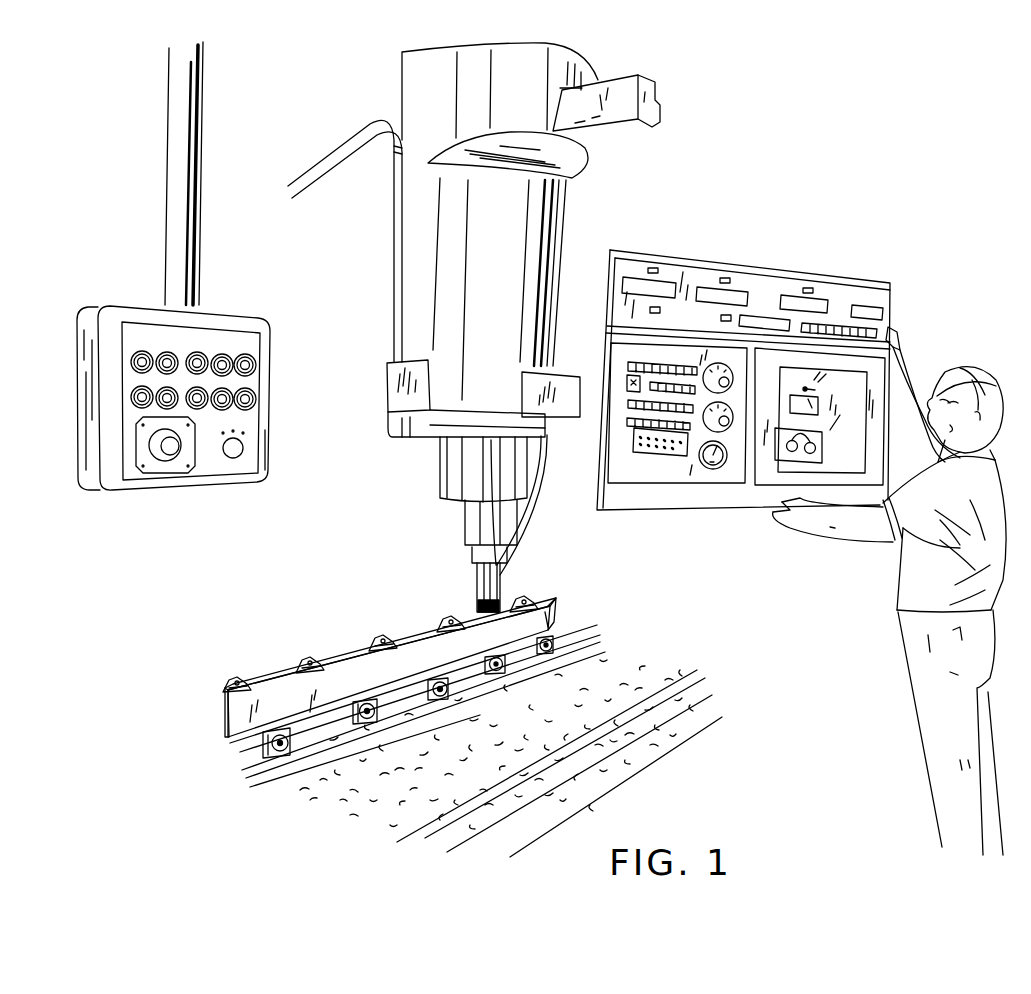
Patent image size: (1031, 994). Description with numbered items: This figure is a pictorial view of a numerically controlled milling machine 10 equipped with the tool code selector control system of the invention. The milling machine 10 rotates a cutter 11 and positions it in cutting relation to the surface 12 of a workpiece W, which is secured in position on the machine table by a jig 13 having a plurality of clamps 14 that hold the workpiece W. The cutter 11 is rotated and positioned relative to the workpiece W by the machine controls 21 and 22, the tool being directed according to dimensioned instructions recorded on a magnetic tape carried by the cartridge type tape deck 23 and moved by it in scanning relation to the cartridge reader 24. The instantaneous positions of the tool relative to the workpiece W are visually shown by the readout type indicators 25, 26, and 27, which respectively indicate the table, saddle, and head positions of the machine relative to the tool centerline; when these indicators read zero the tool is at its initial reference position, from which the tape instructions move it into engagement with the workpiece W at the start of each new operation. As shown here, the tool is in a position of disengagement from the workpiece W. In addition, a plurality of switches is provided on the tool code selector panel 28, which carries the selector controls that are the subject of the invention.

The numerically controlled milling machine 10 is at (599, 187).
The cutter 11 is at (478, 595).
The surface 12 is at (282, 695).
The jig 13 is at (252, 786).
The clamps 14 is at (370, 642).
The machine controls 21 is at (893, 296).
The machine controls 22 is at (136, 503).
The cartridge type tape deck 23 is at (823, 429).
The cartridge reader 24 is at (820, 404).
The readout type indicator 25 is at (667, 275).
The readout type indicator 26 is at (740, 286).
The readout type indicator 27 is at (817, 297).
The tool code selector panel 28 is at (693, 461).
The workpiece W is at (222, 720).